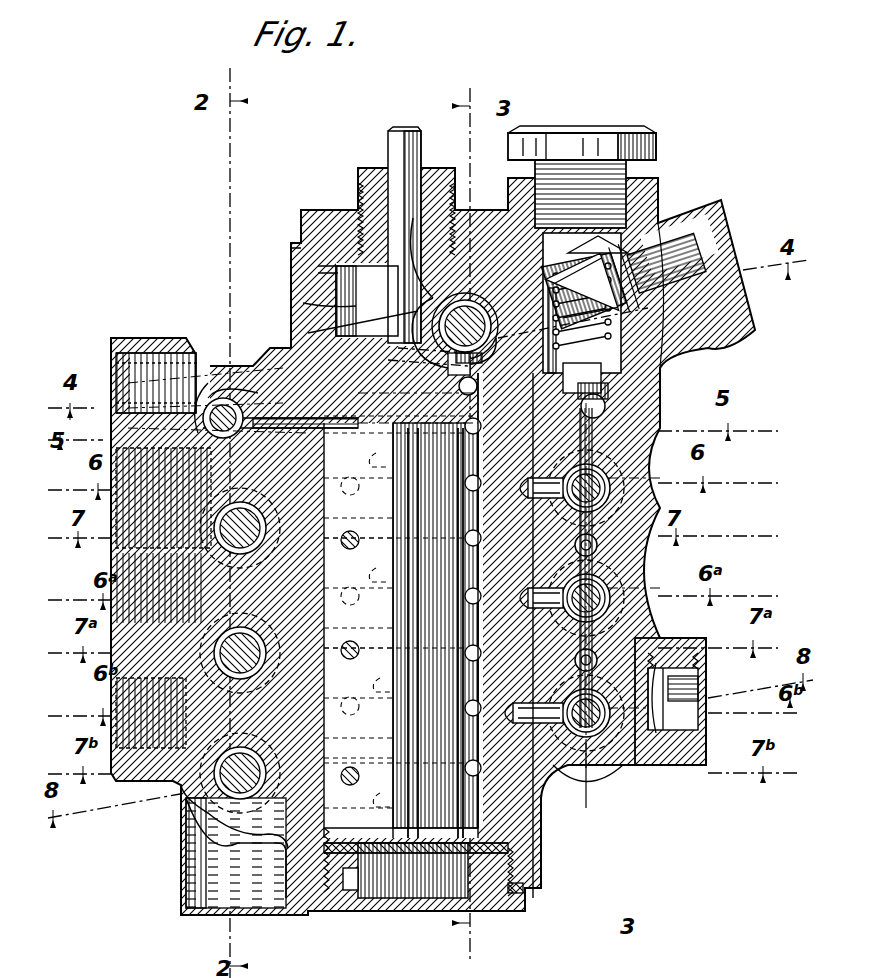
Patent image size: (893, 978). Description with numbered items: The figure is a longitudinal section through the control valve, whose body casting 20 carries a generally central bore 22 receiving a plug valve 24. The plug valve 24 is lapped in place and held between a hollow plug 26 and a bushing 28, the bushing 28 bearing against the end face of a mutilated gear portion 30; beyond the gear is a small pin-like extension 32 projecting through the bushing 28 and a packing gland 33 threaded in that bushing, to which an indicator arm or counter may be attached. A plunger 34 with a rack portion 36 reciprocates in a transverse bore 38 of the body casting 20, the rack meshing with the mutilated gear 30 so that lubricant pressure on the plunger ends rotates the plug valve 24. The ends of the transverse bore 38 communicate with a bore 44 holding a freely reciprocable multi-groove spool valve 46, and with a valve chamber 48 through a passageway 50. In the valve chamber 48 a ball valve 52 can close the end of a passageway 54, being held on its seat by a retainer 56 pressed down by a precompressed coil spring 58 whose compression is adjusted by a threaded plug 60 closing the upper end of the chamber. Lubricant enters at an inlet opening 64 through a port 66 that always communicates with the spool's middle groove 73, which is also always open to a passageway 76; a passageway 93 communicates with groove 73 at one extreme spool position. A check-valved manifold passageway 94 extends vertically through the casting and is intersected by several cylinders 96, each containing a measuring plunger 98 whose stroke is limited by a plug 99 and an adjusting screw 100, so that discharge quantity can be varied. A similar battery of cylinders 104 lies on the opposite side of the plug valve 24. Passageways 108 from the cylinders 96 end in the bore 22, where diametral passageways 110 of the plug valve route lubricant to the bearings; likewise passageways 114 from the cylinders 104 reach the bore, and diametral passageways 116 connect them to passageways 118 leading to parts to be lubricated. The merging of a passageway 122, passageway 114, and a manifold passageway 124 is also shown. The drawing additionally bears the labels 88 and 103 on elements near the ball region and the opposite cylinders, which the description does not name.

The body casting 20 is at (300, 272).
The central bore 22 is at (490, 790).
The plug valve 24 is at (378, 892).
The hollow plug 26 is at (490, 902).
The bushing 28 is at (326, 215).
The mutilated gear portion 30 is at (350, 322).
The pin-like extension 32 is at (398, 133).
The packing gland 33 is at (360, 165).
The plunger 34 is at (490, 300).
The rack portion 36 is at (460, 292).
The transverse bore 38 is at (478, 342).
The bore 44 is at (235, 372).
The spool valve 46 is at (205, 420).
The valve chamber 48 is at (660, 230).
The passageway 50 is at (540, 320).
The ball valve 52 is at (600, 385).
The passageway 54 is at (605, 400).
The retainer 56 is at (612, 345).
The coil spring 58 is at (610, 310).
The threaded plug 60 is at (565, 128).
The inlet opening 64 is at (103, 360).
The port 66 is at (195, 372).
The peripheral groove 73 is at (275, 425).
The passageway 76 is at (330, 425).
The ball 88 is at (450, 382).
The passageway 93 is at (308, 476).
The manifold passageway 94 is at (303, 574).
The cylinders 96 is at (258, 745).
The measuring plunger 98 is at (258, 792).
The plug 99 is at (185, 835).
The adjusting screw 100 is at (580, 730).
The passage 103 is at (562, 648).
The cylinders 104 is at (608, 762).
The passageways 108 is at (355, 835).
The diametral passageways 110 is at (399, 659).
The passageways 114 is at (565, 695).
The diametral passageways 116 is at (407, 565).
The passageways 118 is at (341, 566).
The passageway 122 is at (550, 740).
The manifold passageway 124 is at (615, 605).